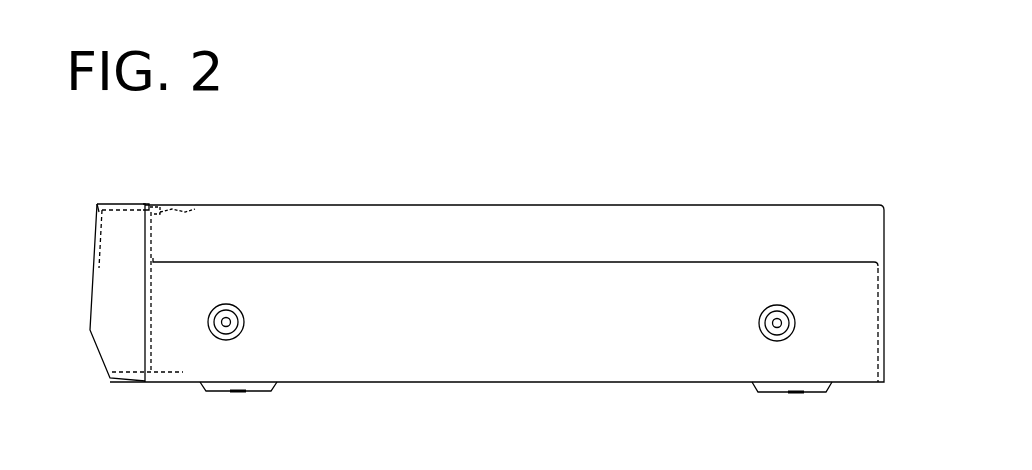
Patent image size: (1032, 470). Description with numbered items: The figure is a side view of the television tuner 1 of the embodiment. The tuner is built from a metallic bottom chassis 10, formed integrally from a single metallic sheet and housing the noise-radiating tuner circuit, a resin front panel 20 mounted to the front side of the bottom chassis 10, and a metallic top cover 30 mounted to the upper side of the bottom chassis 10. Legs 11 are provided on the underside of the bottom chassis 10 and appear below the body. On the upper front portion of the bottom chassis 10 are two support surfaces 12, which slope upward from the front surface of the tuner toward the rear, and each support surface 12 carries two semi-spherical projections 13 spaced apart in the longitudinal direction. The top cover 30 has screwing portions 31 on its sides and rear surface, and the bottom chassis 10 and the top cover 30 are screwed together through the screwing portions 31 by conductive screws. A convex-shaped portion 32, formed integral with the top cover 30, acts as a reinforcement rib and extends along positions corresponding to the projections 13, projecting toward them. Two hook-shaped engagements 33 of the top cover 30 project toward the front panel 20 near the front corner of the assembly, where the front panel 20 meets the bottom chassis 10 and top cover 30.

The television tuner 1 is at (488, 157).
The bottom chassis 10 is at (473, 258).
The legs 11 is at (242, 388).
The support surfaces 12 is at (144, 203).
The projections 13 is at (153, 204).
The front panel 20 is at (111, 305).
The top cover 30 is at (631, 205).
The screwing portions 31 is at (238, 323).
The convex-shaped portion 32 is at (187, 210).
The hook-shaped engagements 33 is at (96, 202).